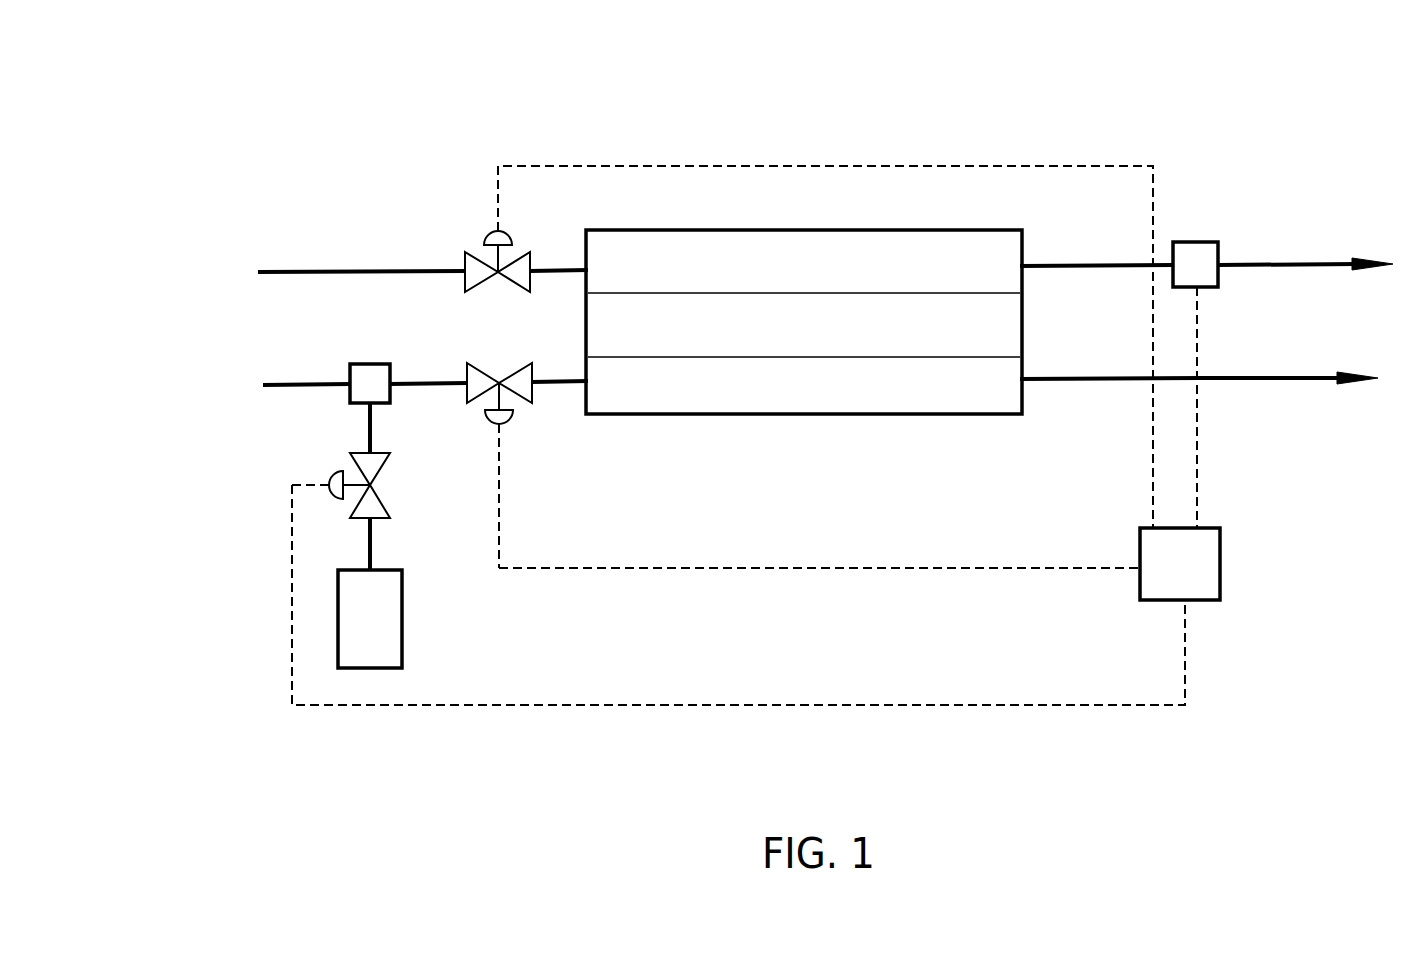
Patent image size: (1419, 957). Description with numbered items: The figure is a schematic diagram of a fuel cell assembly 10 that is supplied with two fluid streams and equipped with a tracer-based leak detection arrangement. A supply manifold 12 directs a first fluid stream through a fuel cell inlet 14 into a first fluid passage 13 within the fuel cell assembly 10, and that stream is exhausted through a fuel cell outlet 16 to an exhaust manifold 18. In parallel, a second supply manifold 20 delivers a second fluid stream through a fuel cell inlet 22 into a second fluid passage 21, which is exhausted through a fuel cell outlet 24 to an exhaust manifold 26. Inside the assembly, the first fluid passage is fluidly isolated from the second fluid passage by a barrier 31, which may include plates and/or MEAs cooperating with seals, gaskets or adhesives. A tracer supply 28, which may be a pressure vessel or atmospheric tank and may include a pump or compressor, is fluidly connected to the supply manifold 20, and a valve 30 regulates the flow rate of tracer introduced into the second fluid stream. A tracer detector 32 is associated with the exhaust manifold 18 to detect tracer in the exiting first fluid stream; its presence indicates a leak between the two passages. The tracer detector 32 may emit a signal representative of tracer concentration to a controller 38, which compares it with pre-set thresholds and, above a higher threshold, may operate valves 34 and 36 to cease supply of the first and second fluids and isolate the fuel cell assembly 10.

The fuel cell assembly 10 is at (655, 153).
The supply manifold 12 is at (352, 271).
The first fluid passage 13 is at (907, 255).
The fuel cell inlet 14 is at (573, 262).
The fuel cell outlet 16 is at (1027, 260).
The exhaust manifold 18 is at (1258, 263).
The supply manifold 20 is at (280, 382).
The second fluid passage 21 is at (852, 395).
The fuel cell inlet 22 is at (585, 375).
The fuel cell outlet 24 is at (1023, 383).
The exhaust manifold 26 is at (1258, 380).
The tracer supply 28 is at (382, 607).
The valve 30 is at (365, 462).
The barrier 31 is at (712, 335).
The tracer detector 32 is at (1192, 260).
The valve 34 is at (481, 268).
The valve 36 is at (522, 382).
The controller 38 is at (1192, 558).